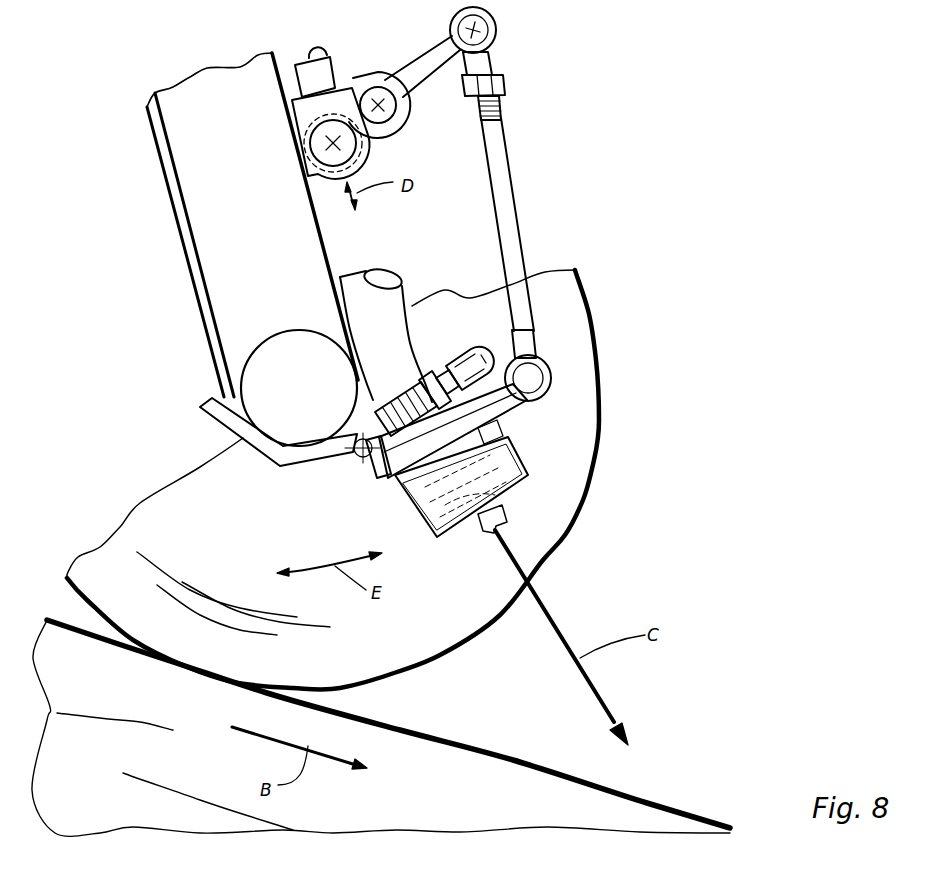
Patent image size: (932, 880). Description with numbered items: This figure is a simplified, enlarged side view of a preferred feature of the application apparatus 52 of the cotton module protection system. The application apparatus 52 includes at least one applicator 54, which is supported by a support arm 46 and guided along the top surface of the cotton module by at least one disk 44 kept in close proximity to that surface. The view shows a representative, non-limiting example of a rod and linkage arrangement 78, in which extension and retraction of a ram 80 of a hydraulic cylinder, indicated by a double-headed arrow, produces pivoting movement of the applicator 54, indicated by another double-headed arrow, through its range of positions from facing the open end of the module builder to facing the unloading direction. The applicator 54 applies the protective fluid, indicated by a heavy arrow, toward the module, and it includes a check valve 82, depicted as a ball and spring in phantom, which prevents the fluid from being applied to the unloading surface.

The disk 44 is at (596, 323).
The support arm 46 is at (210, 188).
The application apparatus 52 is at (678, 96).
The applicator 54 is at (515, 452).
The rod and linkage arrangement 78 is at (541, 189).
The ram 80 is at (336, 62).
The check valve 82 is at (500, 483).